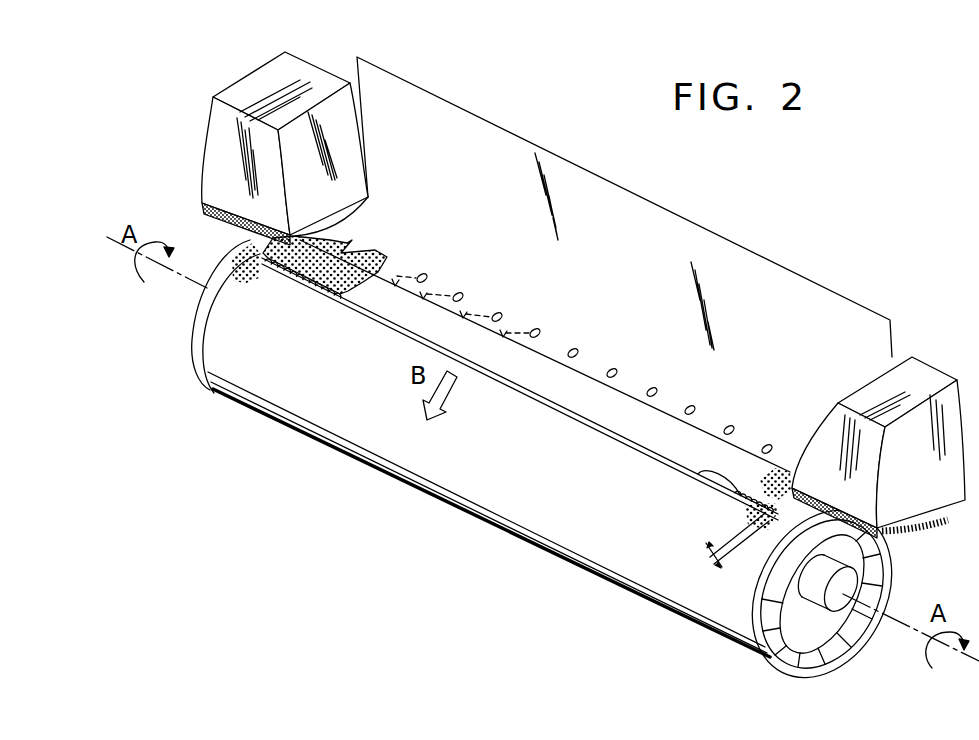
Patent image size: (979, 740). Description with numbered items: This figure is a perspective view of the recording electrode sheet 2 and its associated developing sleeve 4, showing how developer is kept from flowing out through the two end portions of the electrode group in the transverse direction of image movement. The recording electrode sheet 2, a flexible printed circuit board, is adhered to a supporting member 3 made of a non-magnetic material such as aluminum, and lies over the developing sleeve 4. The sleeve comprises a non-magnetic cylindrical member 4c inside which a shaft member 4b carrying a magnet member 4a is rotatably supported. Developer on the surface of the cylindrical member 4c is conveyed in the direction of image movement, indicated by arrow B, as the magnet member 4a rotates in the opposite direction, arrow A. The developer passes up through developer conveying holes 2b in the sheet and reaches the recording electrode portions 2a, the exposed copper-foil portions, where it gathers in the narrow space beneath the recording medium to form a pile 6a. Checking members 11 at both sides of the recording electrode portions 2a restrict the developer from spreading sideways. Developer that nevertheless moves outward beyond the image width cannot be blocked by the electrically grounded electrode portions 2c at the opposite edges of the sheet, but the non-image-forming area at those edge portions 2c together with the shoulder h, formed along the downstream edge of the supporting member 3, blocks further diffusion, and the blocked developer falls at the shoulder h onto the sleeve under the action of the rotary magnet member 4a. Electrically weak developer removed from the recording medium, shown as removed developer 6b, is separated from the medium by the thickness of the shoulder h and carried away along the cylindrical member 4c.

The recording electrode sheet 2 is at (633, 203).
The recording electrode portions 2a is at (700, 476).
The developer conveying holes 2b is at (461, 296).
The electrically grounded electrode portions 2c is at (261, 263).
The supporting member 3 is at (627, 443).
The developing sleeve 4 is at (500, 528).
The magnet member 4a is at (793, 670).
The shaft member 4b is at (822, 622).
The cylindrical member 4c is at (842, 595).
The pile of developer 6a is at (297, 237).
The removed developer 6b is at (234, 270).
The checking members 11 is at (218, 117).
The shoulder h is at (717, 568).